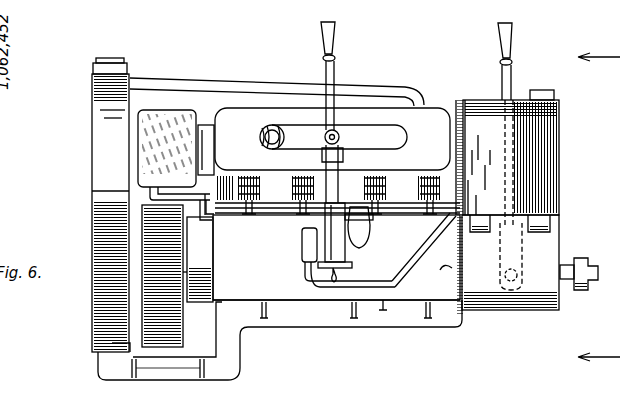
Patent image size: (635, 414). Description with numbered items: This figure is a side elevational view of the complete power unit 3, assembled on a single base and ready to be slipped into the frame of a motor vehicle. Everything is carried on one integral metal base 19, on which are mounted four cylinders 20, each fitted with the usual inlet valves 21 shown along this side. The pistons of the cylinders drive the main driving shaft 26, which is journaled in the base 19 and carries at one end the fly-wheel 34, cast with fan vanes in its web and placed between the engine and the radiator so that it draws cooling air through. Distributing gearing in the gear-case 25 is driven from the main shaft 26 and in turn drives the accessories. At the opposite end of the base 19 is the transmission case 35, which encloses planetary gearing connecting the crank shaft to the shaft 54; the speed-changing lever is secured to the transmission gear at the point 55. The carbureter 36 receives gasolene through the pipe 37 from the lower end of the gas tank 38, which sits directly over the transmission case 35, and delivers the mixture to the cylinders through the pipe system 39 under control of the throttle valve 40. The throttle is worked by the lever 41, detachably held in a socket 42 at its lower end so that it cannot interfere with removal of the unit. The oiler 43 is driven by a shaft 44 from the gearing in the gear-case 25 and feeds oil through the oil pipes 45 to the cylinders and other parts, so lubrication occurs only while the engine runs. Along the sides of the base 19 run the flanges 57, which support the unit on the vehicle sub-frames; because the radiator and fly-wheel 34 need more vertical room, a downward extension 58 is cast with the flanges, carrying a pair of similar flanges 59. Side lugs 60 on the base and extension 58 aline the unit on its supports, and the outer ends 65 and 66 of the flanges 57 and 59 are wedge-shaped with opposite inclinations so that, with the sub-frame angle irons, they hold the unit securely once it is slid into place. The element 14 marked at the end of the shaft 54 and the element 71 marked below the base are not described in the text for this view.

The power unit 3 is at (336, 257).
The shaft 14 is at (592, 266).
The base 19 is at (340, 128).
The cylinders 20 is at (390, 187).
The inlet valves 21 is at (413, 212).
The gear-case 25 is at (205, 243).
The main driving shaft 26 is at (187, 290).
The fly-wheel 34 is at (150, 303).
The transmission case 35 is at (540, 232).
The carbureter 36 is at (336, 257).
The pipe 37 is at (424, 250).
The gas tank 38 is at (540, 170).
The pipe system 39 is at (362, 128).
The throttle valve 40 is at (336, 132).
The lever 41 is at (334, 62).
The socket 42 is at (328, 115).
The oiler 43 is at (157, 110).
The shaft 44 is at (206, 216).
The oil pipes 45 is at (210, 191).
The shaft 54 is at (565, 264).
The point 55 is at (515, 278).
The flanges 57 is at (376, 310).
The downward extension 58 is at (110, 372).
The flanges 59 is at (168, 376).
The side lugs 60 is at (266, 313).
The outer ends 65 is at (442, 270).
The outer ends 66 is at (120, 346).
The support 71 is at (359, 406).